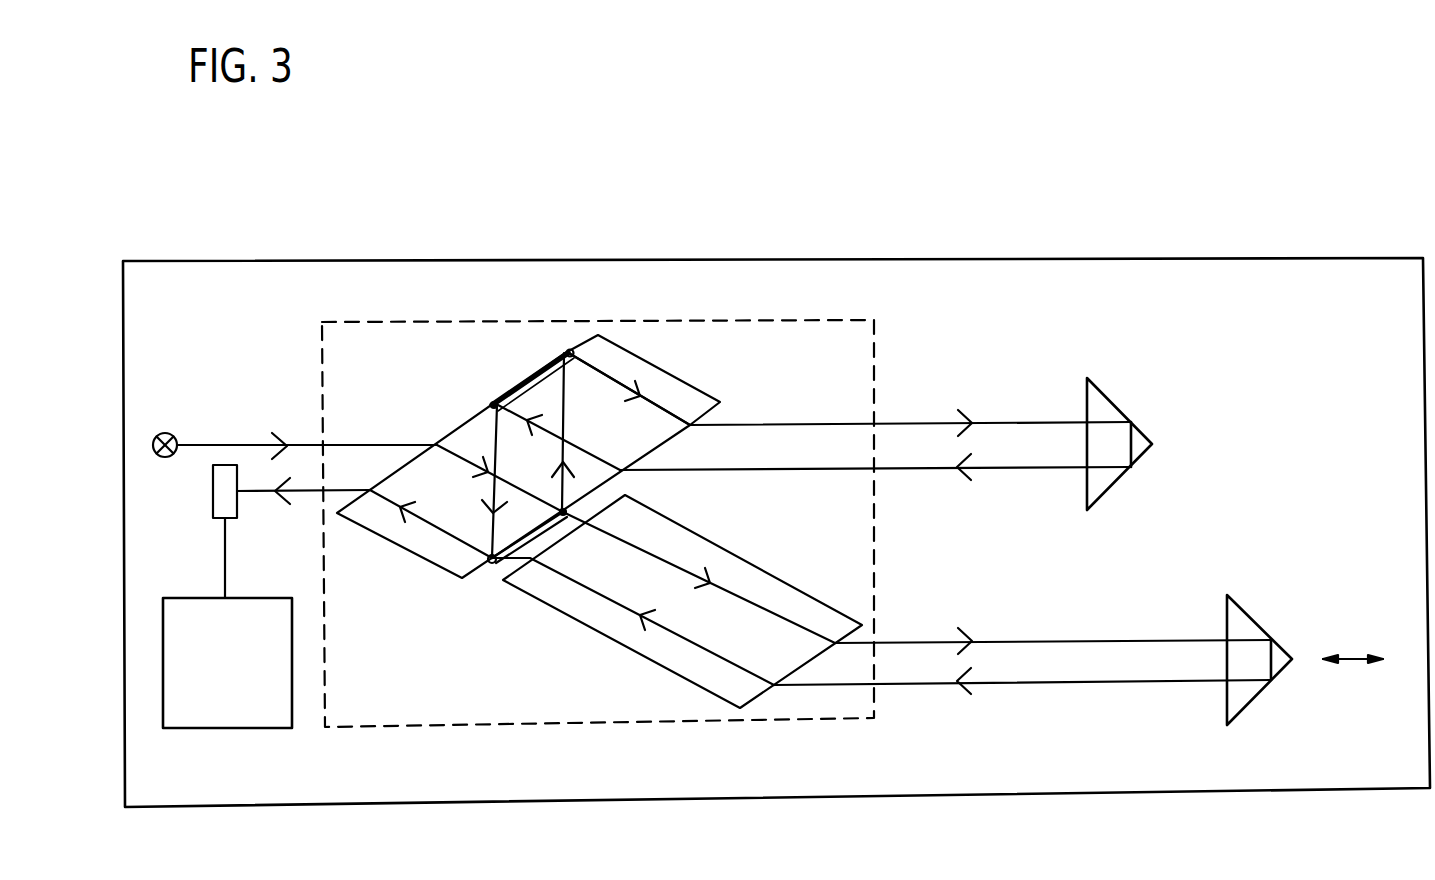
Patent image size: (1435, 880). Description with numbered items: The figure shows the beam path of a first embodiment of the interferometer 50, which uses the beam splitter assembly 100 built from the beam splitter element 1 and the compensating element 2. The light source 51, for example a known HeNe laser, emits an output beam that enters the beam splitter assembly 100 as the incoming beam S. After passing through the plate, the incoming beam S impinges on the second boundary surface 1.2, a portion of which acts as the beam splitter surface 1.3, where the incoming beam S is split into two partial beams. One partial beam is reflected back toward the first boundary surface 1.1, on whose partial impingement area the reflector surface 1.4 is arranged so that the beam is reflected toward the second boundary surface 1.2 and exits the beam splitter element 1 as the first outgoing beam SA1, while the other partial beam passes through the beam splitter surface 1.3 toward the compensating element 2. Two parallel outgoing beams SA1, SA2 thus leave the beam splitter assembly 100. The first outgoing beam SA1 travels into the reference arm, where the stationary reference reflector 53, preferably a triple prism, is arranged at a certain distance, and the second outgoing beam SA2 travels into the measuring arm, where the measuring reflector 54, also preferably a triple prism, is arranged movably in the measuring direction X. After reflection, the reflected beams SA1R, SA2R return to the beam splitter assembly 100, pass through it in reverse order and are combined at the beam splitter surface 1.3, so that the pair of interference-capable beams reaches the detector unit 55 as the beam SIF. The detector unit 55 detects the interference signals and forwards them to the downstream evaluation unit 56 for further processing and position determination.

The beam splitter element 1 is at (542, 476).
The first boundary surface 1.1 is at (455, 418).
The second boundary surface 1.2 is at (722, 417).
The beam splitter surface 1.3 is at (495, 562).
The reflector surface 1.4 is at (513, 387).
The compensating element 2 is at (563, 625).
The interferometer 50 is at (350, 807).
The light source 51 is at (170, 432).
The reference reflector 53 is at (1128, 420).
The measuring reflector 54 is at (1263, 628).
The detector unit 55 is at (227, 485).
The evaluation unit 56 is at (207, 708).
The beam splitter assembly 100 is at (637, 723).
The incoming beam S is at (357, 444).
The first outgoing beam SA1 is at (810, 422).
The first reflected beam SA1R is at (810, 470).
The second outgoing beam SA2 is at (905, 640).
The second reflected beam SA2R is at (905, 683).
The interference beam SIF is at (260, 493).
The measuring direction X is at (1353, 682).